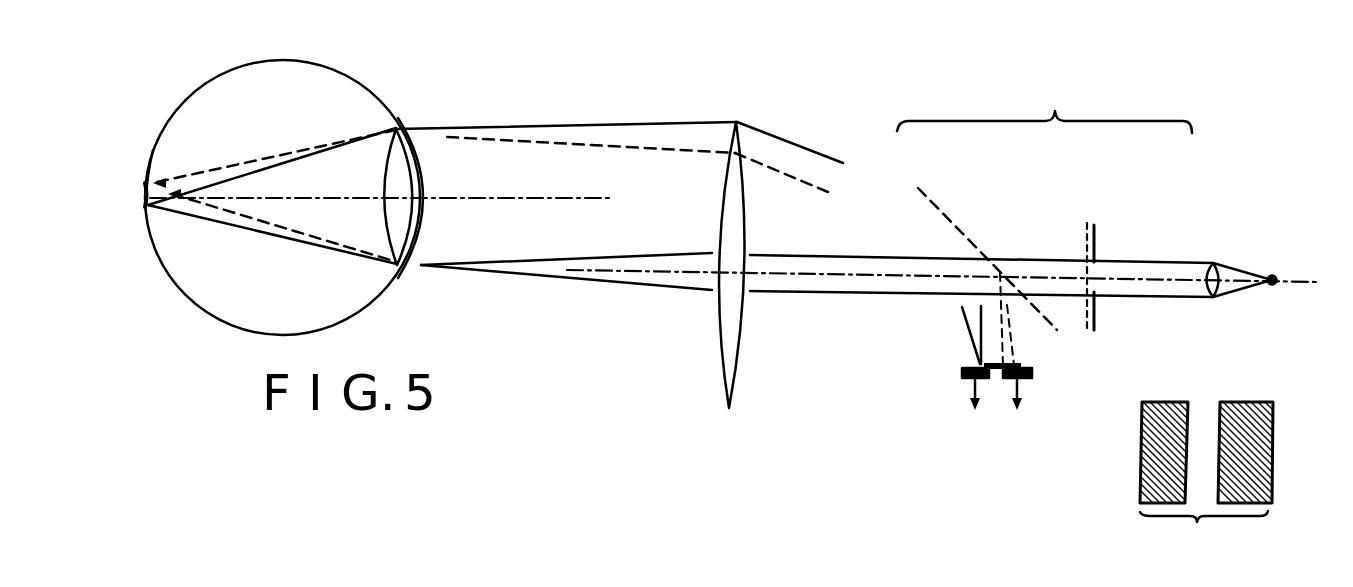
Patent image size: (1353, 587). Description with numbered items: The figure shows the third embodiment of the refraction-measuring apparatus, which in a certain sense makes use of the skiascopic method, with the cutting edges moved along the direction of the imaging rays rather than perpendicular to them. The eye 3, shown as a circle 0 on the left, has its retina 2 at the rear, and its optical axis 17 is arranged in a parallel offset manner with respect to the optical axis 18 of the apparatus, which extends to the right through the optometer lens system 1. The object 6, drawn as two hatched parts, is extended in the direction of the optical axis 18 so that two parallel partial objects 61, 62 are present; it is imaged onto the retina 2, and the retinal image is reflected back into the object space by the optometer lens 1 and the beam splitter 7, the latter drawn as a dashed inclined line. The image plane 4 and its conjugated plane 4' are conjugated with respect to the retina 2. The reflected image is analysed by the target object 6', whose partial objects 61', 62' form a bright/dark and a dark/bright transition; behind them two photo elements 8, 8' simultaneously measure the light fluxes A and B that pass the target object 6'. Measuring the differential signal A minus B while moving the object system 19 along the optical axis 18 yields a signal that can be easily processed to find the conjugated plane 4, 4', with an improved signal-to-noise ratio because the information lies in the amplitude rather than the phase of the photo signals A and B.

The eye 0 is at (364, 70).
The eye 3 is at (164, 120).
The retina 2 is at (139, 193).
The optical axis of the eye 17 is at (499, 200).
The optometer lens system 1 is at (744, 98).
The optical axis of the apparatus 18 is at (1293, 274).
The object system 19 is at (1044, 108).
The beam splitter 7 is at (918, 189).
The image plane 4 is at (1070, 254).
The object 6 is at (1191, 373).
The partial object 61 is at (1171, 326).
The partial object 62 is at (1116, 333).
The partial object of the target object 61' is at (933, 360).
The partial object of the target object 62' is at (1035, 359).
The conjugated image plane 4' is at (1075, 387).
The target object 6' is at (1005, 440).
The photo element 8 is at (935, 410).
The photo element 8' is at (1060, 417).
The light flux signal A is at (968, 386).
The light flux signal B is at (1025, 388).